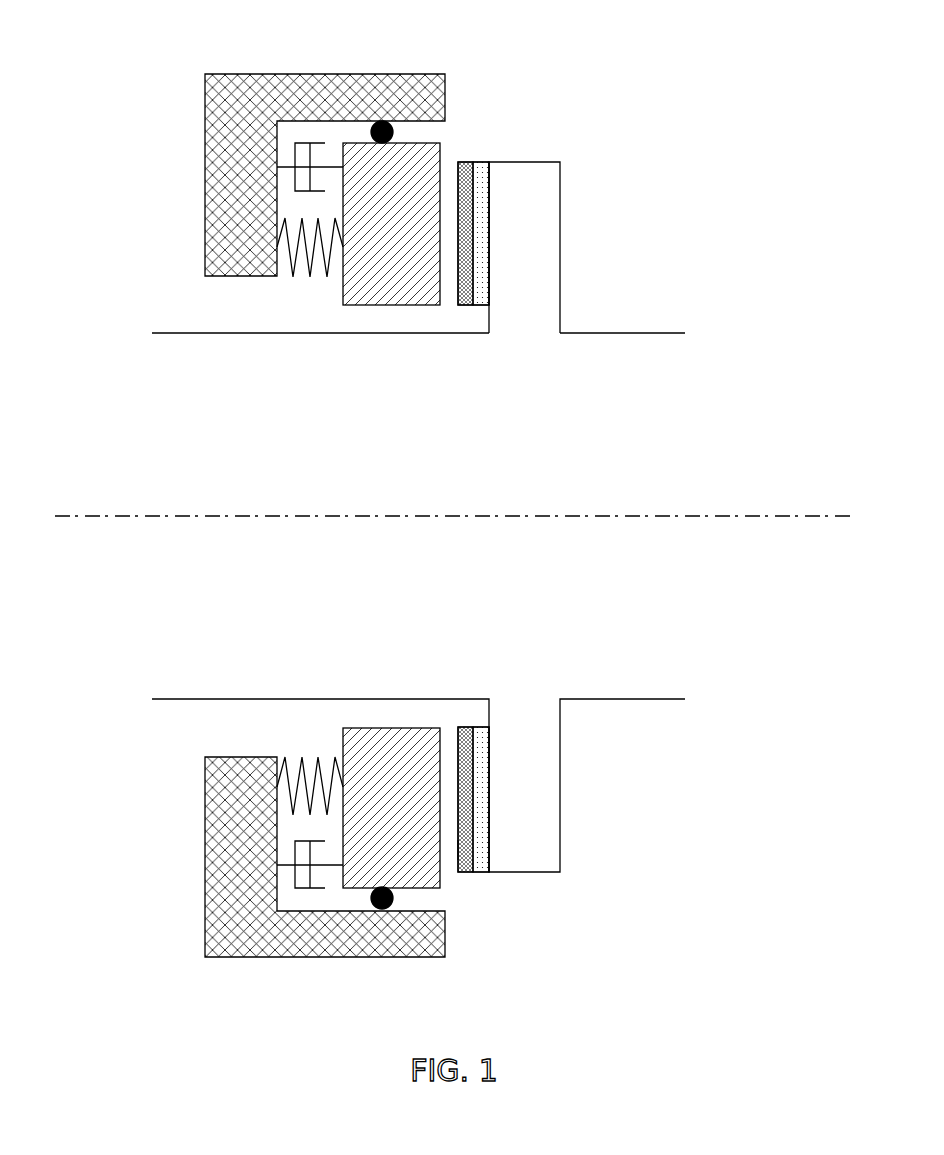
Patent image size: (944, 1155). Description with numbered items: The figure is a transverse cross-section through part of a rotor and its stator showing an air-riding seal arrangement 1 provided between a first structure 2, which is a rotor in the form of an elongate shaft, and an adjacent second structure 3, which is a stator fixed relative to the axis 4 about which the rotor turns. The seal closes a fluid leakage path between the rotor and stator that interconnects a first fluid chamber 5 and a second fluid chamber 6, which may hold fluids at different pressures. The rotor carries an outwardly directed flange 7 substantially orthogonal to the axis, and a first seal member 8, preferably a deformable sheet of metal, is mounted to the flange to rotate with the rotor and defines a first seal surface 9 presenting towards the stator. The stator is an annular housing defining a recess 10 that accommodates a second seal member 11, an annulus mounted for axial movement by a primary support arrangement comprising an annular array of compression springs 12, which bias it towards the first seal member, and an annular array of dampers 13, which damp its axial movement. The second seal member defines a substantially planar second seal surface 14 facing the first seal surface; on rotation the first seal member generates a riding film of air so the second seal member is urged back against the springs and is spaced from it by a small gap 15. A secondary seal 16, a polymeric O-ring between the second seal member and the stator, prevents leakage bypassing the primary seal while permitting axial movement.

The air-riding seal arrangement 1 is at (350, 163).
The first structure 2 is at (588, 342).
The second structure 3 is at (220, 148).
The axis 4 is at (765, 512).
The first fluid chamber 5 is at (655, 104).
The second fluid chamber 6 is at (160, 309).
The flange 7 is at (563, 225).
The first seal member 8 is at (486, 162).
The first seal surface 9 is at (453, 840).
The recess 10 is at (325, 897).
The second seal member 11 is at (407, 868).
The compression springs 12 is at (293, 757).
The dampers 13 is at (293, 155).
The second seal surface 14 is at (449, 155).
The gap 15 is at (448, 747).
The secondary seal 16 is at (387, 125).